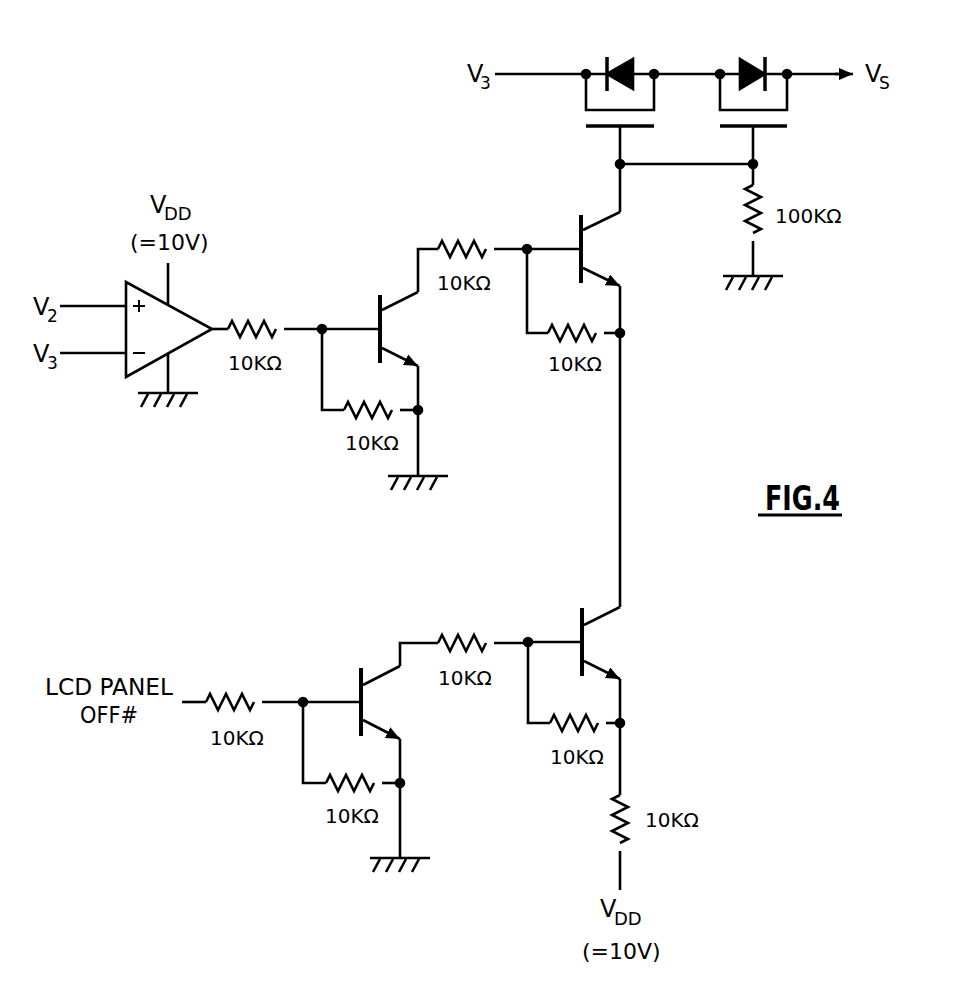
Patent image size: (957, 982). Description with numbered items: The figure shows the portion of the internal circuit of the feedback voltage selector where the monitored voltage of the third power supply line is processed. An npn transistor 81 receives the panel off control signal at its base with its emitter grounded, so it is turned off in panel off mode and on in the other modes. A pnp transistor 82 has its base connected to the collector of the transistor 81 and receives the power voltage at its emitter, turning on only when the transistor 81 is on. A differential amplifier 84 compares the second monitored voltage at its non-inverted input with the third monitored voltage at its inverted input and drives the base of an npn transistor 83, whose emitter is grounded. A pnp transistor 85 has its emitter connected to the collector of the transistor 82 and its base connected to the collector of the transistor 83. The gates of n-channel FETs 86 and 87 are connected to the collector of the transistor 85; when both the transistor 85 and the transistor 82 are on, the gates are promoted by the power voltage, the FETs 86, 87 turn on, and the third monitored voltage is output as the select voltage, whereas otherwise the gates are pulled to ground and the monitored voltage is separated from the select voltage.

The npn transistor 81 is at (392, 707).
The pnp transistor 82 is at (612, 640).
The npn transistor 83 is at (410, 327).
The differential amplifier 84 is at (199, 305).
The pnp transistor 85 is at (612, 247).
The n-channel FET 86 is at (622, 49).
The n-channel FET 87 is at (755, 49).